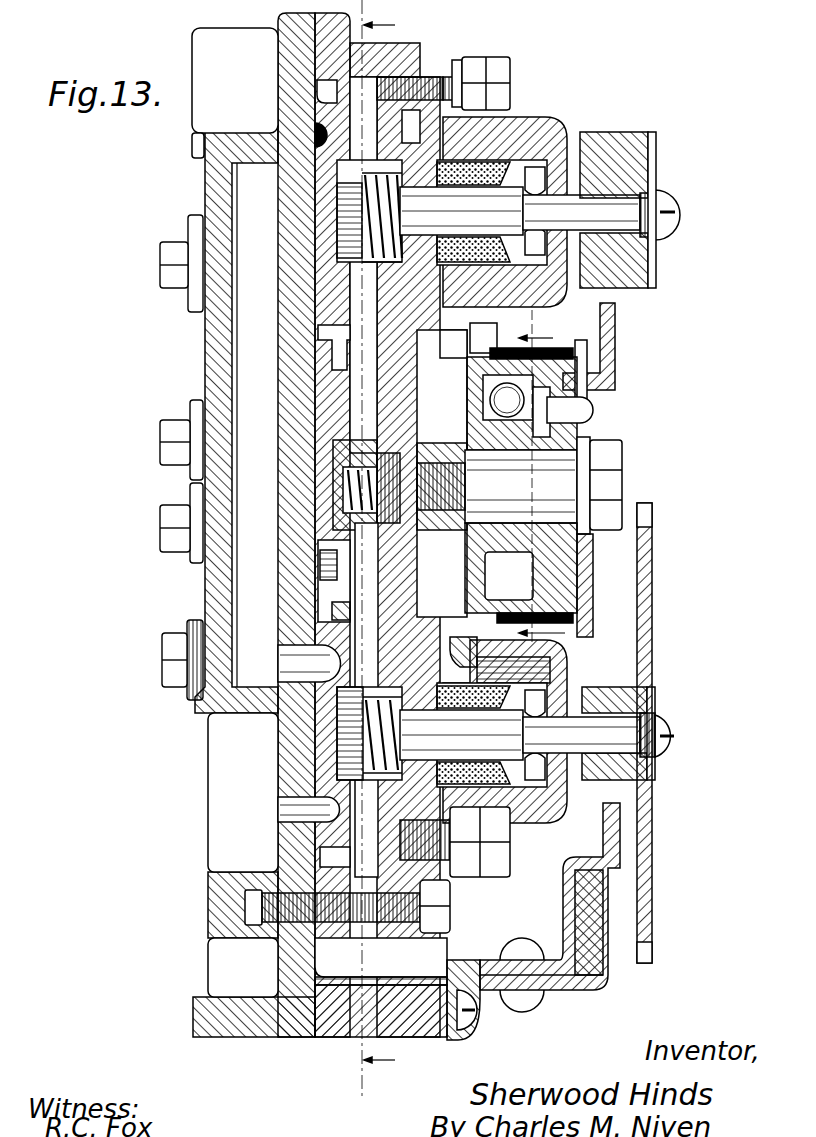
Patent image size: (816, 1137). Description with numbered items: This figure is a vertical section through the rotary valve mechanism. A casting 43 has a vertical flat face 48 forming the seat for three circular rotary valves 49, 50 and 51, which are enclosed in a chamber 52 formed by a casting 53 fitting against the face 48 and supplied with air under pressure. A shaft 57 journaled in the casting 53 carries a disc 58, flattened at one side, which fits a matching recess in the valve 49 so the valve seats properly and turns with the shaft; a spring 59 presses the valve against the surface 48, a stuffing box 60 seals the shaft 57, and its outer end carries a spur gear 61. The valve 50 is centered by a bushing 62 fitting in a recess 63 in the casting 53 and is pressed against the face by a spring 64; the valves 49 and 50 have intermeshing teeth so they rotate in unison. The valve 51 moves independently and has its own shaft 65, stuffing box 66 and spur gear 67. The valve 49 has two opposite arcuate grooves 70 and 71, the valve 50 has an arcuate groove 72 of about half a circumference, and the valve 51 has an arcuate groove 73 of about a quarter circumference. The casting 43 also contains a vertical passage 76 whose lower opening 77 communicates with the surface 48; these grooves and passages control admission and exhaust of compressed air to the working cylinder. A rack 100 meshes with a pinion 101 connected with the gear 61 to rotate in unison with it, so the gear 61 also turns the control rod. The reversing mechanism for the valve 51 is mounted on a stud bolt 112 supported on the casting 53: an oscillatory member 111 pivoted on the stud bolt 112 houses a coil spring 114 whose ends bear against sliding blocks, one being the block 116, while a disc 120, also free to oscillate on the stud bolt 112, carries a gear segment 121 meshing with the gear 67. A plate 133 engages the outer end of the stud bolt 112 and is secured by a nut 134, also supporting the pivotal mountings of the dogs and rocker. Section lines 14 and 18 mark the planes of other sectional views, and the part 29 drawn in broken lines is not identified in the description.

The section line 14 is at (371, 550).
The section line 18 is at (542, 477).
The opening 29 is at (305, 268).
The casting 43 is at (247, 1018).
The vertical flat face 48 is at (322, 772).
The circular rotary valve 49 is at (336, 832).
The circular rotary valve 50 is at (338, 592).
The circular rotary valve 51 is at (332, 287).
The chamber 52 is at (368, 370).
The casting 53 is at (392, 382).
The shaft 57 is at (512, 806).
The disc 58 is at (346, 742).
The spring 59 is at (350, 700).
The stuffing box 60 is at (552, 683).
The spur gear 61 is at (647, 870).
The bushing 62 is at (352, 457).
The recess 63 is at (410, 448).
The spring 64 is at (470, 535).
The shaft 65 is at (498, 205).
The stuffing box 66 is at (500, 148).
The spur gear 67 is at (625, 150).
The arcuate groove 70 is at (322, 806).
The arcuate groove 71 is at (330, 663).
The arcuate groove 72 is at (338, 577).
The arcuate groove 73 is at (308, 128).
The vertically extending passage 76 is at (240, 348).
The opening 77 is at (290, 642).
The rack 100 is at (622, 825).
The pinion 101 is at (641, 690).
The oscillatory member 111 is at (468, 557).
The stud bolt 112 is at (558, 472).
The coil spring 114 is at (500, 398).
The movable block 116 is at (509, 576).
The disc 120 is at (548, 590).
The gear segment 121 is at (614, 323).
The plate 133 is at (588, 557).
The nut 134 is at (604, 486).